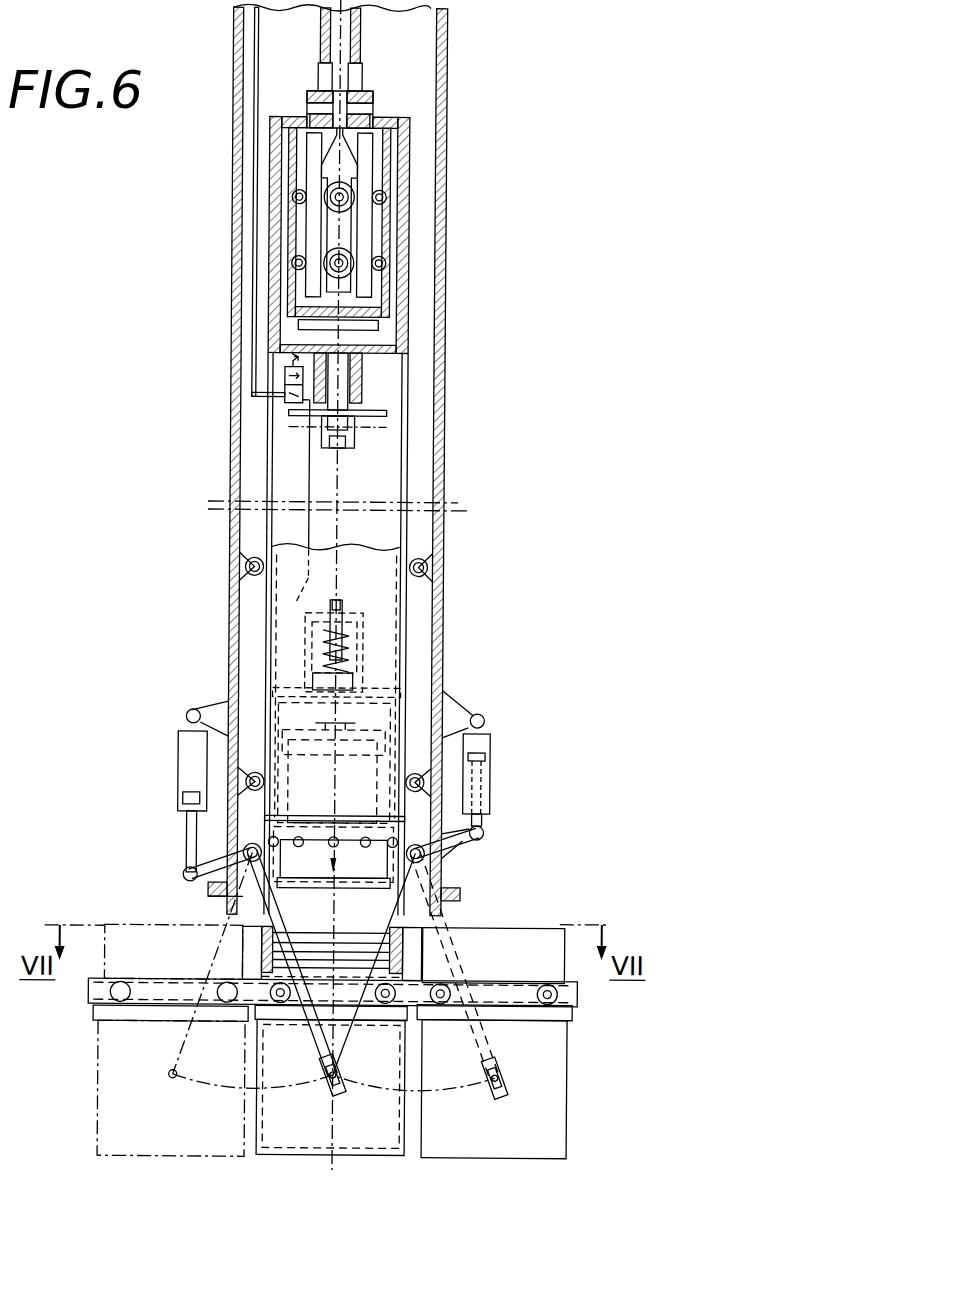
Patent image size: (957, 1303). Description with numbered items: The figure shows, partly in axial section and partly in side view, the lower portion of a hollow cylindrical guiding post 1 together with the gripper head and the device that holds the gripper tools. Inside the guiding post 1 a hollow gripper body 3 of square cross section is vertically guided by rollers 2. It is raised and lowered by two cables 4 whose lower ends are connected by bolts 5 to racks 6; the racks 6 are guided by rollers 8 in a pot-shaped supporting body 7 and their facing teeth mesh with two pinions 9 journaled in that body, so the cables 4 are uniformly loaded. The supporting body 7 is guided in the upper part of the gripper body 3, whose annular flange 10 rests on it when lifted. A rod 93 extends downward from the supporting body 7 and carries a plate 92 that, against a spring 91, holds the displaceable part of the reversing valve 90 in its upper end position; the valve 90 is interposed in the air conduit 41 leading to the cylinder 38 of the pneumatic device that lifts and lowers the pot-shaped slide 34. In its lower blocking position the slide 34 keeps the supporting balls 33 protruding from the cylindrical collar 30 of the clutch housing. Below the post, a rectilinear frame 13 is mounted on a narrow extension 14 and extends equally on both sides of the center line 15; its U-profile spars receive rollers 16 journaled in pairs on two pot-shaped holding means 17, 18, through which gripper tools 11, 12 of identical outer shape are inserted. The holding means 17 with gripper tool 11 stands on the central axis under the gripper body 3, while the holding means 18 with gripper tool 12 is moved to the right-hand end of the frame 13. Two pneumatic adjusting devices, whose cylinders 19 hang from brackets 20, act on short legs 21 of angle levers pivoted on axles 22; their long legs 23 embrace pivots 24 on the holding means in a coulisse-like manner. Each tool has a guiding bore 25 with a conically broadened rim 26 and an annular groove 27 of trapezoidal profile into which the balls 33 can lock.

The guiding post 1 is at (446, 350).
The rollers 2 is at (425, 576).
The gripper body 3 is at (411, 478).
The cables 4 is at (326, 34).
The bolts 5 is at (368, 110).
The racks 6 is at (368, 245).
The supporting body 7 is at (410, 170).
The rollers 8 is at (387, 197).
The pinions 9 is at (352, 252).
The annular flange 10 is at (300, 118).
The gripper tool 11 is at (260, 691).
The gripper tool 12 is at (534, 940).
The rectilinear frame 13 is at (157, 978).
The extension 14 is at (272, 917).
The center line 15 is at (343, 565).
The rollers 16 is at (287, 1004).
The holding means 17 is at (362, 1131).
The holding means 18 is at (502, 1134).
The cylinders 19 is at (186, 745).
The brackets 20 is at (213, 706).
The short legs 21 is at (200, 878).
The axles 22 is at (257, 844).
The long legs 23 is at (318, 1038).
The pivots 24 is at (347, 1075).
The bores 25 is at (336, 958).
The conical broadening 26 is at (405, 930).
The annular grooves 27 is at (371, 945).
The cylindrical collar 30 is at (306, 848).
The supporting balls 33 is at (371, 848).
The slide 34 is at (296, 764).
The cylinder 38 is at (363, 640).
The air conveying conduit 41 is at (256, 282).
The reversing valve 90 is at (284, 382).
The spring 91 is at (292, 360).
The plate 92 is at (379, 420).
The rod 93 is at (348, 386).